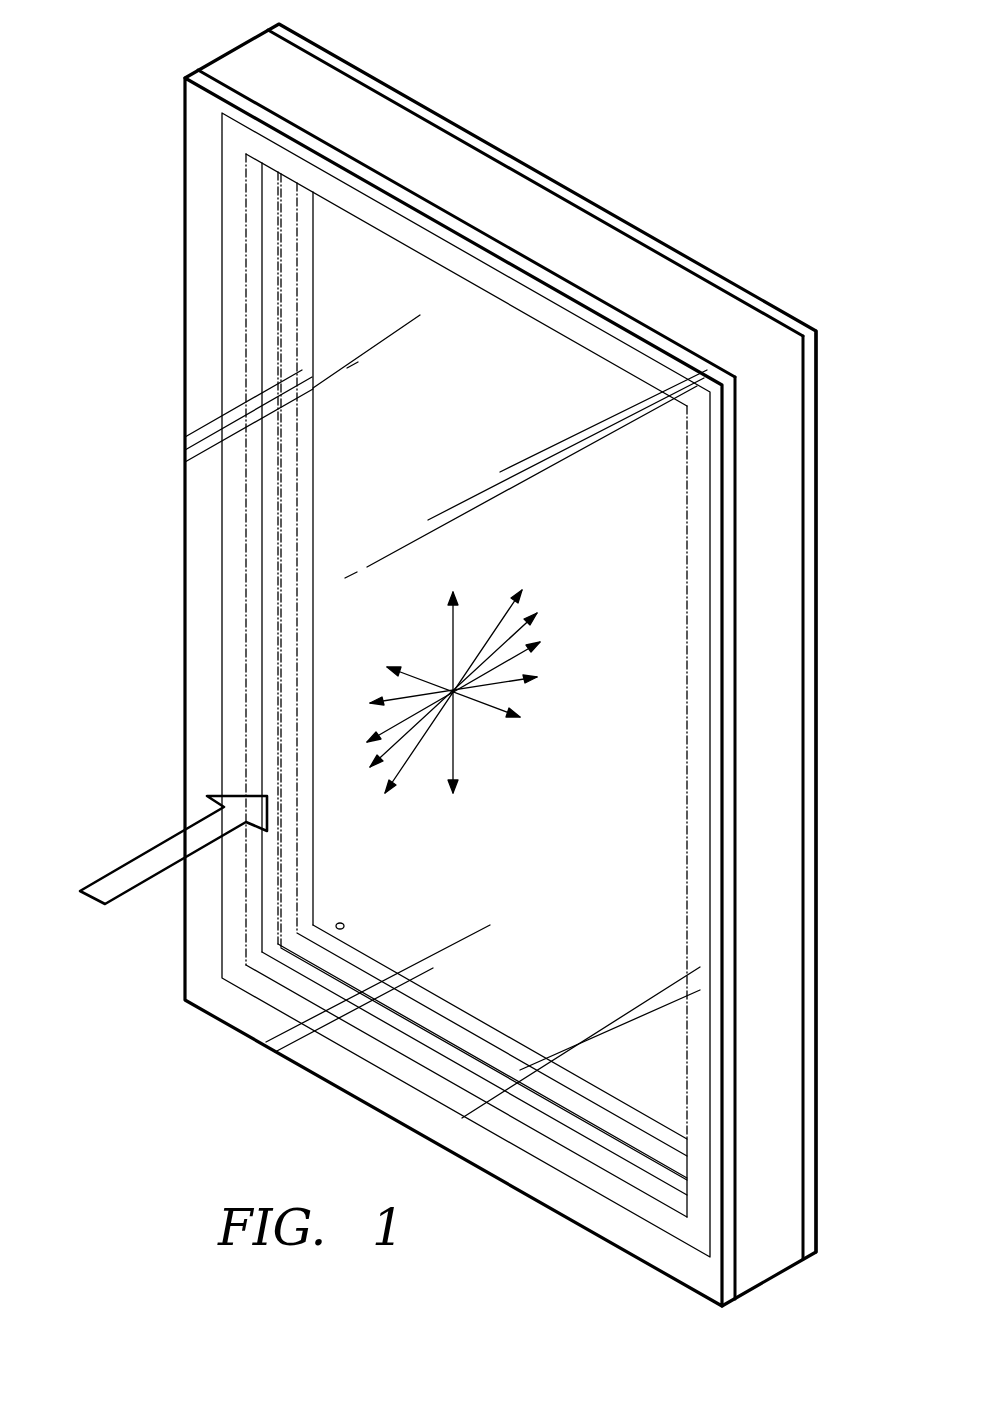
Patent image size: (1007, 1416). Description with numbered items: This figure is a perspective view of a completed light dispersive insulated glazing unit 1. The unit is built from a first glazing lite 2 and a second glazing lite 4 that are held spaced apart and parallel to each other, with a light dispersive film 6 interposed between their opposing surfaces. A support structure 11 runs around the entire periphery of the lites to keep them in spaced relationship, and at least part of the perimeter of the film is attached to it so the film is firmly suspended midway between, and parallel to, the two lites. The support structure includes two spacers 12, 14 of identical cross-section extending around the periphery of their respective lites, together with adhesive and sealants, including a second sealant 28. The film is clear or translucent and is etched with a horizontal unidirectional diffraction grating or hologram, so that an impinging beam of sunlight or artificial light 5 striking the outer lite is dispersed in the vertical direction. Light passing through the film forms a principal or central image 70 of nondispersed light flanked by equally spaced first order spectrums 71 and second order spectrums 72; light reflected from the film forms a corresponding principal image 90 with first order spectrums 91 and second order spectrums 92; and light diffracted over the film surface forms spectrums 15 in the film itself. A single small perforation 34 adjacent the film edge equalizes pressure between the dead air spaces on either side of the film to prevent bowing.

The light dispersive insulated glazing unit 1 is at (155, 508).
The first glazing lite 2 is at (810, 557).
The second glazing lite 4 is at (218, 88).
The impinging beam of sunlight or artificial light 5 is at (103, 874).
The light dispersive film 6 is at (338, 977).
The principal or central image 70 is at (518, 653).
The first order transmitted spectrums 71 is at (527, 603).
The second order transmitted spectrums 72 is at (553, 712).
The principal or central image 90 is at (387, 725).
The first order reflected spectrums 91 is at (363, 802).
The second order reflected spectrums 92 is at (420, 798).
The support structure 11 is at (327, 100).
The spacer 12 is at (305, 470).
The spacer 14 is at (233, 697).
The spectrums diffracted in the film 15 is at (452, 623).
The second sealant 28 is at (488, 182).
The perforation 34 is at (343, 925).